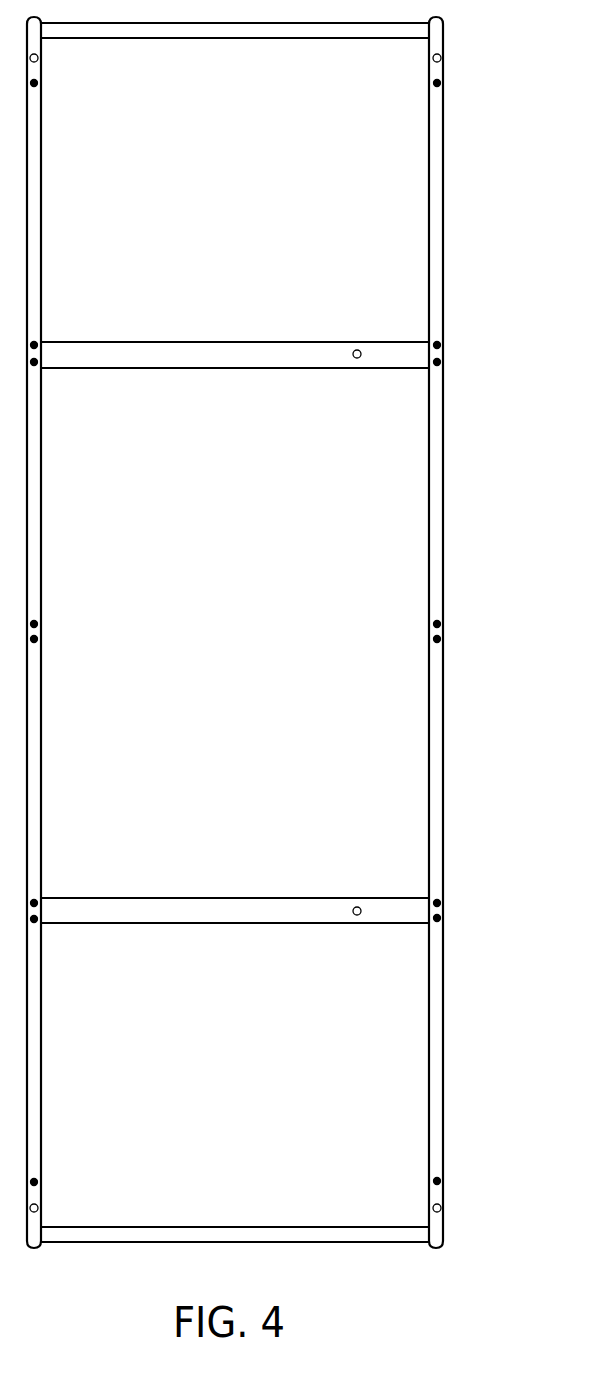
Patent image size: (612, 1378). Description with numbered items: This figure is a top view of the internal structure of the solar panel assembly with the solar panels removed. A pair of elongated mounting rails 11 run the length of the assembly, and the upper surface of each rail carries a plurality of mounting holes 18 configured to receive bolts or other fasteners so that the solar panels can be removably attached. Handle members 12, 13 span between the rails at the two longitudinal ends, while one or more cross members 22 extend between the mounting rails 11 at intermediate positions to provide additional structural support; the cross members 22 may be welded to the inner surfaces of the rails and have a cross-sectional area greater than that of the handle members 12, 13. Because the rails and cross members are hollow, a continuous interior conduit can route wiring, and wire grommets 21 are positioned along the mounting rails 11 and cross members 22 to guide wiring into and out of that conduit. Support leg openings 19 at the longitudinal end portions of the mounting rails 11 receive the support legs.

The mounting rails 11 is at (429, 462).
The handle member 12 is at (365, 1232).
The handle member 13 is at (381, 32).
The mounting holes 18 is at (445, 626).
The support leg openings 19 is at (445, 1208).
The wire grommets 21 is at (355, 920).
The cross members 22 is at (86, 342).